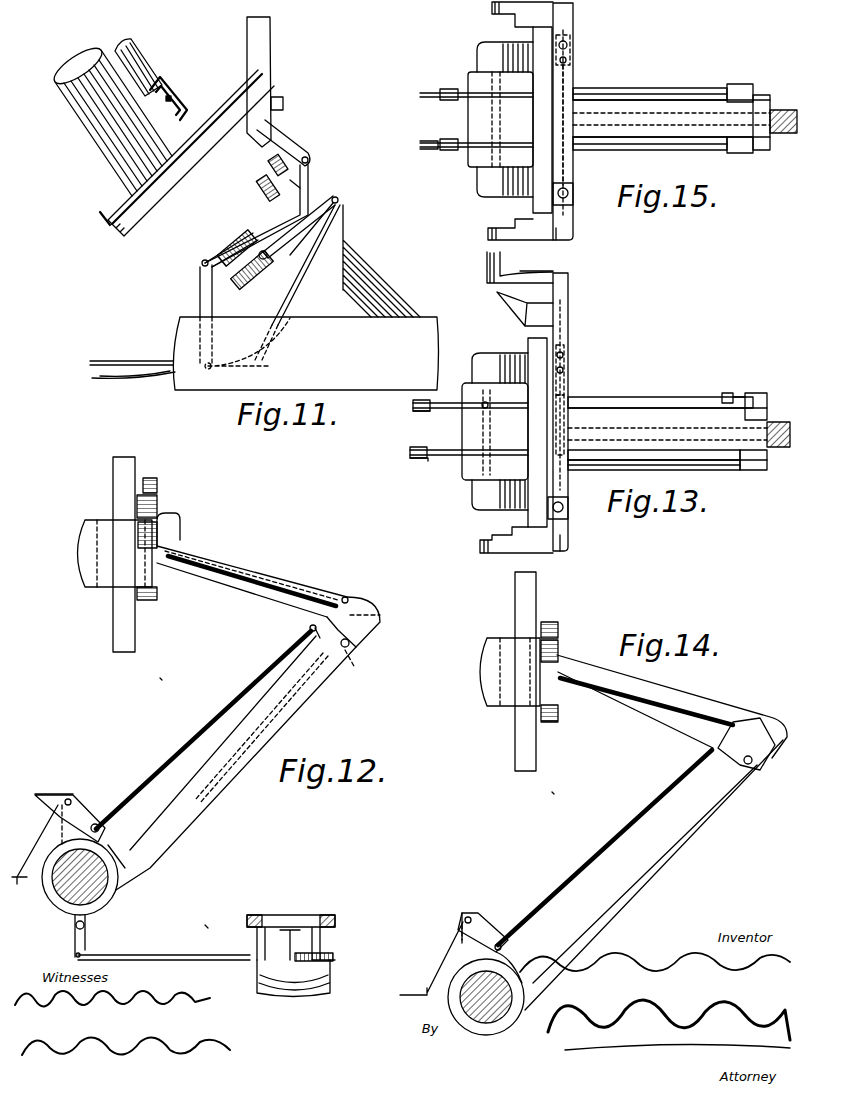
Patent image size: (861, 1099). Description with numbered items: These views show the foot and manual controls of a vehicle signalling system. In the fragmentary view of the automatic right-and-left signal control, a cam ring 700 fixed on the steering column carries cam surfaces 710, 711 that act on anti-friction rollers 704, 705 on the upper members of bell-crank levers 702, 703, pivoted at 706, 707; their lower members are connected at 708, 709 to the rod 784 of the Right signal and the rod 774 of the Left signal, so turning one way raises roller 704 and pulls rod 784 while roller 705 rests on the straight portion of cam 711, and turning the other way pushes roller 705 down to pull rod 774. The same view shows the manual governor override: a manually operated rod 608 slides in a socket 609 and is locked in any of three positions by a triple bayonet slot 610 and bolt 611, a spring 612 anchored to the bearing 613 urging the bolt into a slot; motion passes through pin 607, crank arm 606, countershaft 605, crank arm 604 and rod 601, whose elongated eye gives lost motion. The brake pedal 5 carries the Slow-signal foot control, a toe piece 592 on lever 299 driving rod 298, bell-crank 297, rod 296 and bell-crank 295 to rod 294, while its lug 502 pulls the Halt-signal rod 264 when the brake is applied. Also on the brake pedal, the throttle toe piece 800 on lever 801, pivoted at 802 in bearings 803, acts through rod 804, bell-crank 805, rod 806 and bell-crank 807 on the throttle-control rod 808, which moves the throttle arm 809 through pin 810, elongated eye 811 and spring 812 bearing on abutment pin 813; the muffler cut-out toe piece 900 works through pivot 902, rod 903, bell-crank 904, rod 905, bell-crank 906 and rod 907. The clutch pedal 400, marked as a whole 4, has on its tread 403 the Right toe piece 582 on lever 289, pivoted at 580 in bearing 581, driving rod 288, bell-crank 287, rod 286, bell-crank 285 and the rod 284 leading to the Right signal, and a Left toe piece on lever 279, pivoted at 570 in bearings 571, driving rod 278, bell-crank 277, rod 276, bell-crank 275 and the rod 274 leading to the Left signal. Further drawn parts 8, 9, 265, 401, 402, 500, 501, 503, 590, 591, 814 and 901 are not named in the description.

In FIG. 14, the arm assembly 4 is at (559, 785).
In FIG. 12, the brake pedal 5 is at (167, 671).
In FIG. 12, the link assembly 8 is at (212, 918).
In FIG. 13, the frame assembly 9 is at (536, 259).
In FIG. 13, the rod 264 is at (413, 404).
In FIG. 12, the rod 264 is at (55, 795).
In FIG. 13, the pivot pin 265 is at (483, 402).
In FIG. 15, the rod 274 is at (441, 93).
In FIG. 15, the bell-crank 275 is at (477, 82).
In FIG. 15, the rod 276 is at (665, 97).
In FIG. 15, the bell-crank 277 is at (742, 96).
In FIG. 15, the rod 278 is at (612, 99).
In FIG. 15, the lever 279 is at (567, 63).
In FIG. 15, the rod 284 is at (448, 139).
In FIG. 14, the rod 284 is at (425, 990).
In FIG. 15, the bell-crank 285 is at (455, 148).
In FIG. 14, the bell-crank 285 is at (460, 925).
In FIG. 15, the rod 286 is at (595, 150).
In FIG. 14, the rod 286 is at (705, 753).
In FIG. 15, the bell-crank 287 is at (740, 150).
In FIG. 14, the bell-crank 287 is at (750, 725).
In FIG. 15, the rod 288 is at (660, 145).
In FIG. 14, the rod 288 is at (655, 715).
In FIG. 15, the lever 289 is at (573, 215).
In FIG. 13, the rod 294 is at (410, 455).
In FIG. 12, the rod 294 is at (18, 880).
In FIG. 13, the bell-crank 295 is at (448, 457).
In FIG. 12, the bell-crank 295 is at (98, 828).
In FIG. 13, the rod 296 is at (700, 462).
In FIG. 12, the rod 296 is at (175, 755).
In FIG. 13, the bell-crank 297 is at (745, 465).
In FIG. 12, the bell-crank 297 is at (350, 643).
In FIG. 13, the rod 298 is at (630, 455).
In FIG. 12, the rod 298 is at (271, 582).
In FIG. 13, the lever 299 is at (570, 540).
In FIG. 15, the clutch pedal 400 is at (690, 112).
In FIG. 14, the clutch pedal 400 is at (640, 870).
In FIG. 14, the hub 401 is at (495, 1015).
In FIG. 14, the lever 402 is at (505, 913).
In FIG. 15, the tread 403 is at (533, 30).
In FIG. 14, the tread 403 is at (515, 735).
In FIG. 12, the lower arm 500 is at (300, 690).
In FIG. 13, the hub cylinder 501 is at (475, 495).
In FIG. 12, the hub cylinder 501 is at (108, 895).
In FIG. 13, the lug 502 is at (462, 433).
In FIG. 12, the lug 502 is at (98, 797).
In FIG. 13, the plate 503 is at (528, 515).
In FIG. 12, the plate 503 is at (118, 637).
In FIG. 15, the pivot 570 is at (570, 196).
In FIG. 14, the pivot 570 is at (550, 622).
In FIG. 15, the bearings 571 is at (560, 240).
In FIG. 14, the bearings 571 is at (560, 648).
In FIG. 15, the pivot 580 is at (572, 45).
In FIG. 14, the pivot 580 is at (550, 723).
In FIG. 15, the bearing 581 is at (580, 50).
In FIG. 14, the bearing 581 is at (558, 713).
In FIG. 15, the toe piece 582 is at (488, 233).
In FIG. 14, the toe piece 582 is at (475, 688).
In FIG. 13, the nut 590 is at (565, 352).
In FIG. 12, the nut 590 is at (148, 600).
In FIG. 13, the nut 591 is at (565, 368).
In FIG. 12, the nut 591 is at (157, 593).
In FIG. 13, the toe piece 592 is at (480, 550).
In FIG. 12, the toe piece 592 is at (82, 577).
In FIG. 11, the rod 601 is at (107, 381).
In FIG. 11, the crank arm 604 is at (345, 248).
In FIG. 11, the countershaft 605 is at (312, 160).
In FIG. 11, the crank arm 606 is at (307, 172).
In FIG. 11, the pin 607 is at (295, 187).
In FIG. 11, the manually operated rod 608 is at (138, 60).
In FIG. 11, the socket 609 is at (197, 113).
In FIG. 11, the triple bayonet slot 610 is at (172, 98).
In FIG. 11, the bolt 611 is at (172, 95).
In FIG. 11, the spring 612 is at (288, 155).
In FIG. 11, the bearing 613 is at (270, 140).
In FIG. 11, the cam ring 700 is at (303, 213).
In FIG. 11, the bell-crank lever 702 is at (110, 224).
In FIG. 11, the bell-crank lever 703 is at (300, 277).
In FIG. 11, the anti-friction roller 704 is at (222, 247).
In FIG. 11, the anti-friction roller 705 is at (290, 296).
In FIG. 11, the pivot 706 is at (203, 265).
In FIG. 11, the pivot 707 is at (340, 199).
In FIG. 11, the connection 708 is at (210, 368).
In FIG. 11, the connection 709 is at (240, 364).
In FIG. 11, the cam surface 710 is at (240, 220).
In FIG. 11, the cam surface 711 is at (267, 273).
In FIG. 11, the rod 774 is at (123, 361).
In FIG. 11, the rod 784 is at (135, 373).
In FIG. 13, the throttle toe piece 800 is at (515, 310).
In FIG. 13, the lever 801 is at (568, 389).
In FIG. 13, the pivot 802 is at (566, 512).
In FIG. 12, the pivot 802 is at (150, 478).
In FIG. 12, the bearings 803 is at (157, 500).
In FIG. 13, the rod 804 is at (758, 398).
In FIG. 12, the rod 804 is at (366, 600).
In FIG. 12, the bell-crank 805 is at (380, 618).
In FIG. 12, the rod 806 is at (135, 884).
In FIG. 12, the bell-crank 807 is at (74, 940).
In FIG. 12, the throttle-control rod 808 is at (138, 955).
In FIG. 12, the arm 809 is at (300, 938).
In FIG. 12, the pin 810 is at (300, 958).
In FIG. 12, the elongated eye 811 is at (312, 990).
In FIG. 12, the spring 812 is at (322, 965).
In FIG. 12, the abutment pin 813 is at (333, 956).
In FIG. 12, the flange 814 is at (255, 950).
In FIG. 13, the muffler cut-out toe piece 900 is at (489, 275).
In FIG. 13, the frame 901 is at (568, 304).
In FIG. 13, the pivot 902 is at (580, 375).
In FIG. 13, the rod 903 is at (678, 415).
In FIG. 12, the rod 903 is at (182, 535).
In FIG. 13, the bell-crank 904 is at (727, 396).
In FIG. 12, the bell-crank 904 is at (344, 597).
In FIG. 13, the rod 905 is at (642, 404).
In FIG. 12, the rod 905 is at (310, 632).
In FIG. 13, the bell-crank 906 is at (483, 425).
In FIG. 13, the rod 907 is at (418, 410).